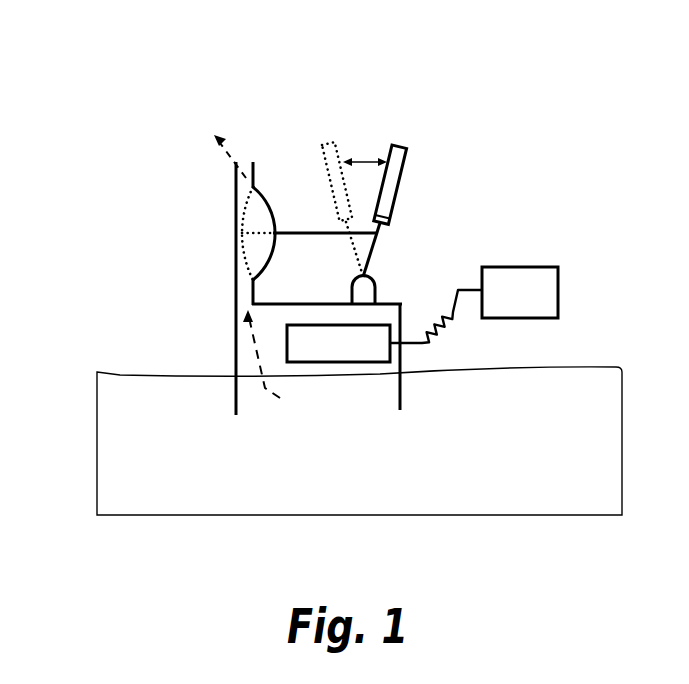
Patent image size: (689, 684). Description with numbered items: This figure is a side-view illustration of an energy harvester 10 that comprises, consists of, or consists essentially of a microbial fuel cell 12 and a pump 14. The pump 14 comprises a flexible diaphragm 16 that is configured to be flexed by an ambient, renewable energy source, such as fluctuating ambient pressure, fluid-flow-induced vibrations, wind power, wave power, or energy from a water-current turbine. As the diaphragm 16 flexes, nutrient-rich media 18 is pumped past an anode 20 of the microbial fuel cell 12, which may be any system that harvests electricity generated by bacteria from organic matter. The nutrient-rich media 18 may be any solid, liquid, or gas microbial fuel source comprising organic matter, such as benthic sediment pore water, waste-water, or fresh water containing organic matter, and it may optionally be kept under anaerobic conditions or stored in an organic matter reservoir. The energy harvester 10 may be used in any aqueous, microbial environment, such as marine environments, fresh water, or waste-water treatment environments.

The energy harvester 10 is at (101, 63).
The microbial fuel cell 12 is at (588, 258).
The pump 14 is at (202, 162).
The flexible diaphragm 16 is at (268, 263).
The nutrient-rich media 18 is at (265, 383).
The anode 20 is at (312, 362).